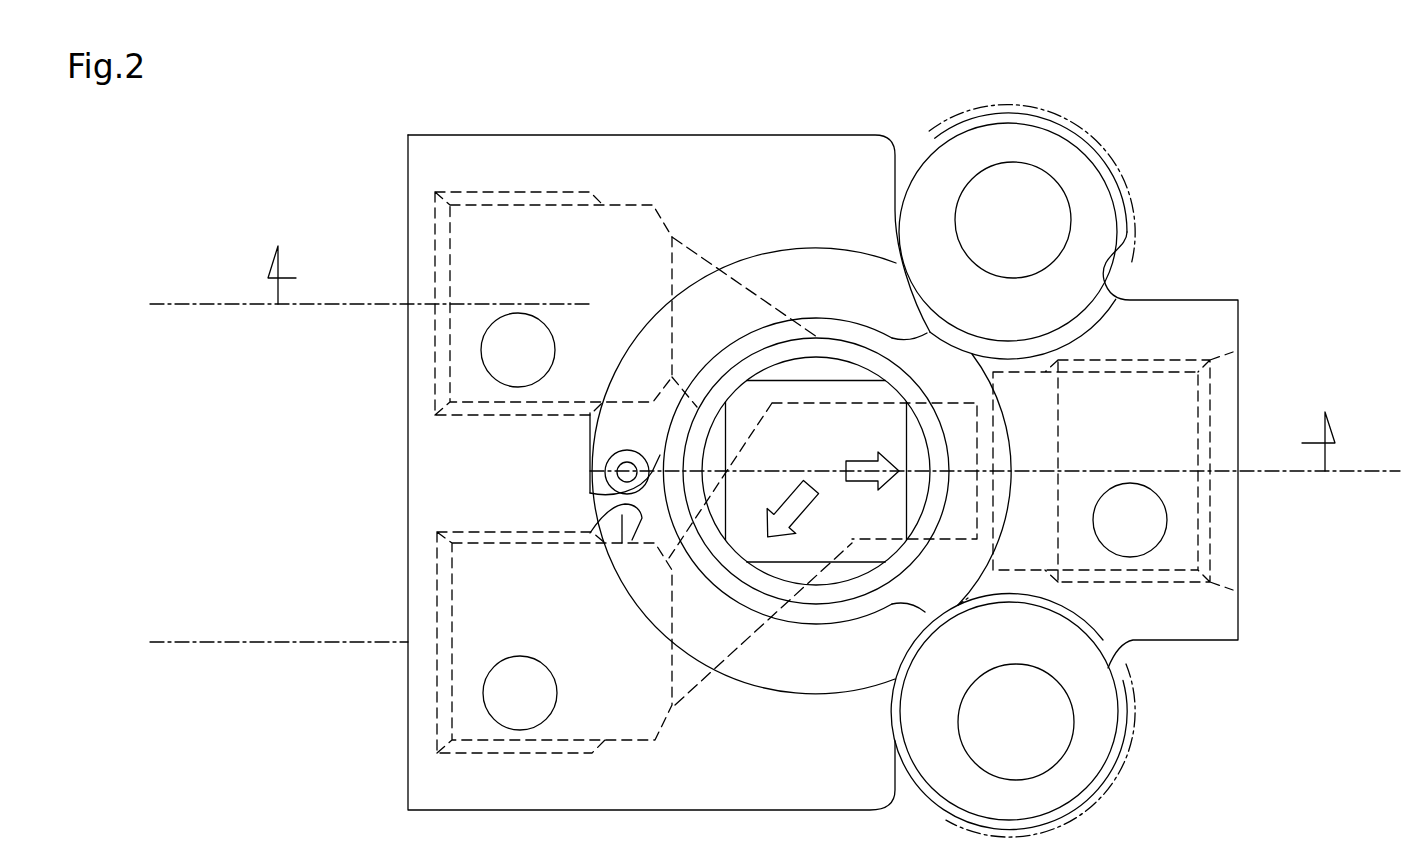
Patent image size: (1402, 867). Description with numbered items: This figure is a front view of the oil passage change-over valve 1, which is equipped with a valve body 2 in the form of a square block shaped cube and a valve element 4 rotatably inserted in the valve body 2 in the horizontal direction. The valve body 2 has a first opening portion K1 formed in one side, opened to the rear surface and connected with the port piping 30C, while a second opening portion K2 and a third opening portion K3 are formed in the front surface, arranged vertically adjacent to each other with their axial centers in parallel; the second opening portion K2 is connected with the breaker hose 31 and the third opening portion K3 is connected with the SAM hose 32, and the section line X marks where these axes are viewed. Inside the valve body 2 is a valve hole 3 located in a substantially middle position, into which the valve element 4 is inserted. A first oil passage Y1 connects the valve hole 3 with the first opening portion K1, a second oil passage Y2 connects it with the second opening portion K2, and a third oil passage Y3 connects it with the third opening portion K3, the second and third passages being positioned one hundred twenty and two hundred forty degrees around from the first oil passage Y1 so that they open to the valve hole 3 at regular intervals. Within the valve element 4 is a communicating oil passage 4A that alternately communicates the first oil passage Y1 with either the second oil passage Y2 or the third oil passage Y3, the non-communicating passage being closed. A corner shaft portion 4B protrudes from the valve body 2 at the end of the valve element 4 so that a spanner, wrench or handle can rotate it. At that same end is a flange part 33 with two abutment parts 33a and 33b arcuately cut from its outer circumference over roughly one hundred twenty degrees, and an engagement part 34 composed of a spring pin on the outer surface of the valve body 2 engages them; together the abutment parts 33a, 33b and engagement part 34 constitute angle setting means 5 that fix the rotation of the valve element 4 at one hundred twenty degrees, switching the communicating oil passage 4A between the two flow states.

The oil passage change-over valve 1 is at (1212, 158).
The valve body 2 is at (715, 135).
The valve hole 3 is at (852, 578).
The valve element 4 is at (827, 355).
The communicating oil passage 4A is at (817, 403).
The corner shaft portion 4B is at (870, 380).
The angle setting means 5 is at (515, 459).
The port piping 30C is at (1358, 478).
The breaker hose 31 is at (220, 310).
The SAM hose 32 is at (222, 636).
The flange part 33 is at (636, 522).
The abutment part 33a is at (608, 516).
The abutment part 33b is at (930, 338).
The engagement part 34 is at (604, 488).
The first opening portion K1 is at (1240, 358).
The second opening portion K2 is at (435, 192).
The third opening portion K3 is at (437, 753).
The first oil passage Y1 is at (978, 542).
The second oil passage Y2 is at (752, 268).
The third oil passage Y3 is at (790, 632).
The section line X is at (799, 358).